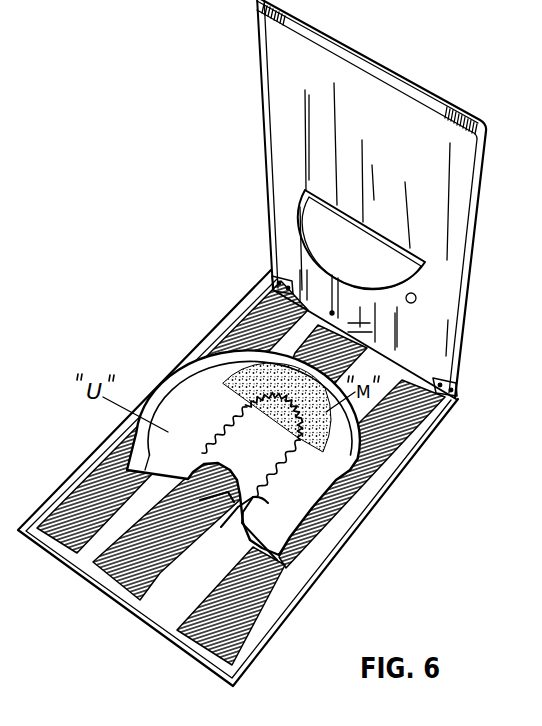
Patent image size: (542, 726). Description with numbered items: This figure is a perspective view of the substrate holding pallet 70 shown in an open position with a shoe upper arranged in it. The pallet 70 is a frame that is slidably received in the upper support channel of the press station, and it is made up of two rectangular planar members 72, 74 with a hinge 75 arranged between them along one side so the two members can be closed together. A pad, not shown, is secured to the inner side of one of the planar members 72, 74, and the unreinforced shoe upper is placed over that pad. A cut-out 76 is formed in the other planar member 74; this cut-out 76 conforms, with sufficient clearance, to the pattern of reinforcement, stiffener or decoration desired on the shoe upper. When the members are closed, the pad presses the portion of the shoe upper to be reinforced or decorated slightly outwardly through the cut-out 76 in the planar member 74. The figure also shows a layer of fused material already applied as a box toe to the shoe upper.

The substrate holding pallet 70 is at (345, 481).
The rectangular planar member 72 is at (338, 548).
The rectangular planar member 74 is at (455, 325).
The hinge 75 is at (269, 275).
The cut-out 76 is at (402, 304).